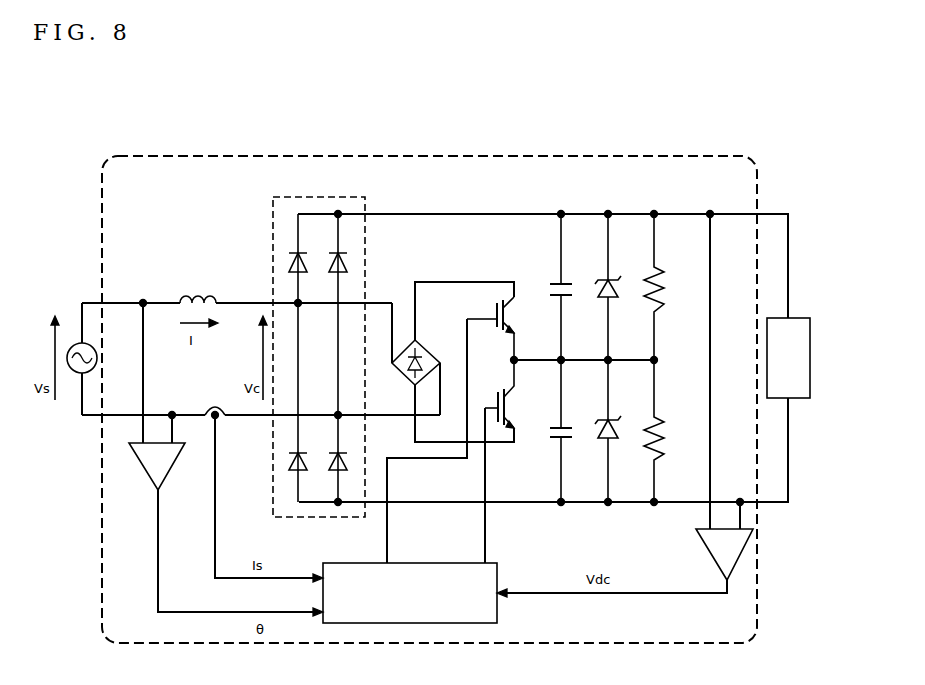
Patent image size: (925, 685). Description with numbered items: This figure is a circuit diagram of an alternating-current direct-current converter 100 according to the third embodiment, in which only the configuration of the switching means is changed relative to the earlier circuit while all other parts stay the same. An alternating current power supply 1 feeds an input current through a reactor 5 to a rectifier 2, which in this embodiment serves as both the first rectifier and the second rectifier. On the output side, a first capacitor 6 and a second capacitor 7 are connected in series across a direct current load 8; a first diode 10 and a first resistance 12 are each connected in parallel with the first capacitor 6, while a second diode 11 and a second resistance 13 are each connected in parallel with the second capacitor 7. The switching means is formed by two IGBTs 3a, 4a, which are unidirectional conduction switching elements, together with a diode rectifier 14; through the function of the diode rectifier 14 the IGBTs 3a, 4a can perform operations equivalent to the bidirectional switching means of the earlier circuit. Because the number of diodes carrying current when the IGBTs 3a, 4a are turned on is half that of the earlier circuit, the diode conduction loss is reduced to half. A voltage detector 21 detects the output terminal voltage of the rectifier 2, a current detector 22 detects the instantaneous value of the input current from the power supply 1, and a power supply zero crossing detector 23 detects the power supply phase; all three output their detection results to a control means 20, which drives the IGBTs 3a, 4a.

The alternating-current direct-current converter 100 is at (757, 200).
The alternating current power supply 1 is at (95, 346).
The reactor 5 is at (193, 290).
The rectifier 2 is at (283, 197).
The diode rectifier 14 is at (425, 345).
The IGBT 3a is at (495, 305).
The IGBT 4a is at (495, 445).
The first capacitor 6 is at (568, 281).
The second capacitor 7 is at (568, 425).
The first diode 10 is at (614, 278).
The second diode 11 is at (614, 418).
The first resistance 12 is at (660, 268).
The second resistance 13 is at (660, 418).
The direct current load 8 is at (782, 316).
The control means 20 is at (499, 582).
The voltage detector 21 is at (702, 540).
The current detector 22 is at (220, 420).
The power supply zero crossing detector 23 is at (163, 488).